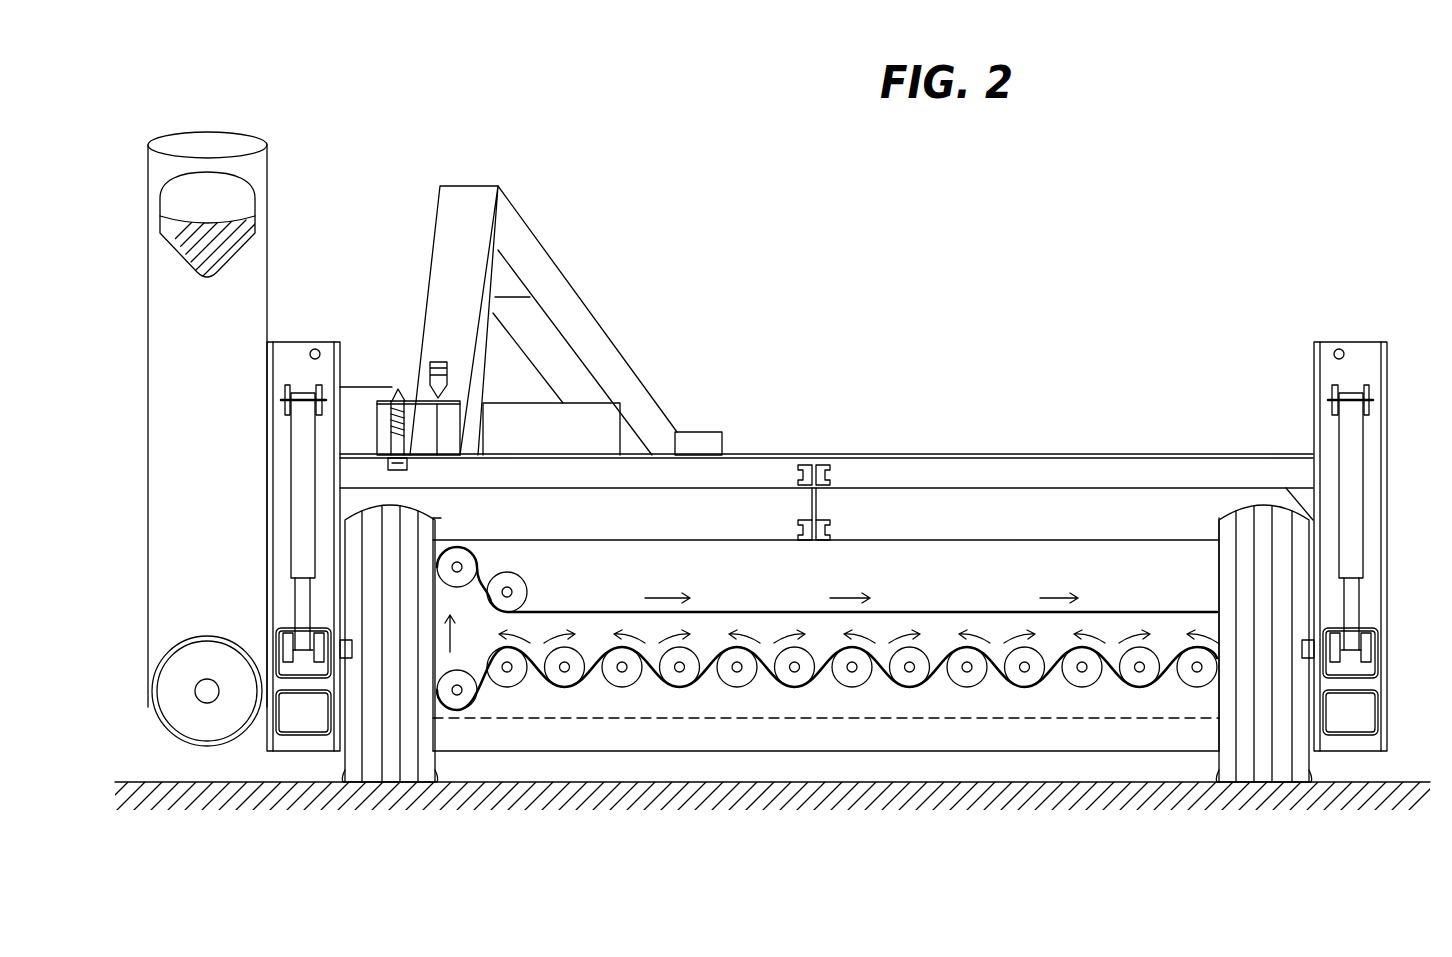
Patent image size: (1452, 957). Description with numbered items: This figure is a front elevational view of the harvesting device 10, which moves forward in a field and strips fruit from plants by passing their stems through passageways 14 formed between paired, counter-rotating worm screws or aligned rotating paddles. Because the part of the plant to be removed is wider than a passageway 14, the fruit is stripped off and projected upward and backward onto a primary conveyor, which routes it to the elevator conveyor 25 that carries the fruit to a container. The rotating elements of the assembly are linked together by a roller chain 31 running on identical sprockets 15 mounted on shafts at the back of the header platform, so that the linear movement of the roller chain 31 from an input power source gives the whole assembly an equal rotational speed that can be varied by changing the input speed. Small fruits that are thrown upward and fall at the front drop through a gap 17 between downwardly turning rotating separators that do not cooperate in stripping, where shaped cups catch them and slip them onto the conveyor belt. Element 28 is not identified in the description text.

The device 10 is at (755, 499).
The passageway 14 is at (992, 685).
The sprockets 15 is at (827, 756).
The gap 17 is at (1172, 648).
The elevator conveyor 25 is at (215, 455).
The upper conveyor belt 28 is at (928, 612).
The roller chain 31 is at (1097, 687).